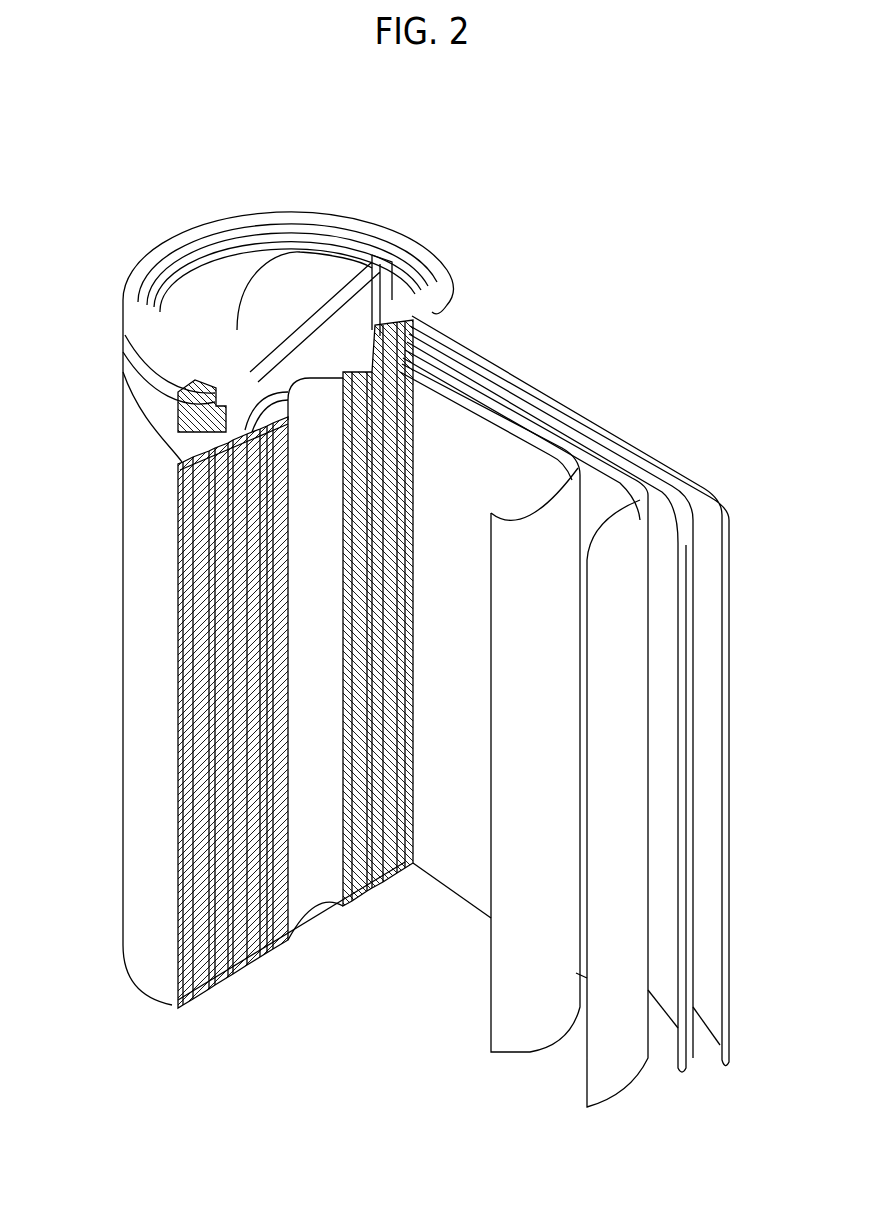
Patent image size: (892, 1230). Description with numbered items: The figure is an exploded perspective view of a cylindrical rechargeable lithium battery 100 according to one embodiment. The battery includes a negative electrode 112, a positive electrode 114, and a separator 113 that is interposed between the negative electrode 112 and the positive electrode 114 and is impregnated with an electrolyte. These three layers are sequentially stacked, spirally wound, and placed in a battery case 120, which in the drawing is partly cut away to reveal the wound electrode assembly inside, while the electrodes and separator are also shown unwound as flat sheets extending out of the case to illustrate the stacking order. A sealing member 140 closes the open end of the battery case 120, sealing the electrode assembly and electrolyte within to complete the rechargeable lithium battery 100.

The rechargeable lithium battery 100 is at (517, 190).
The negative electrode 112 is at (732, 508).
The separator 113 is at (533, 392).
The positive electrode 114 is at (615, 453).
The battery case 120 is at (138, 613).
The sealing member 140 is at (243, 262).